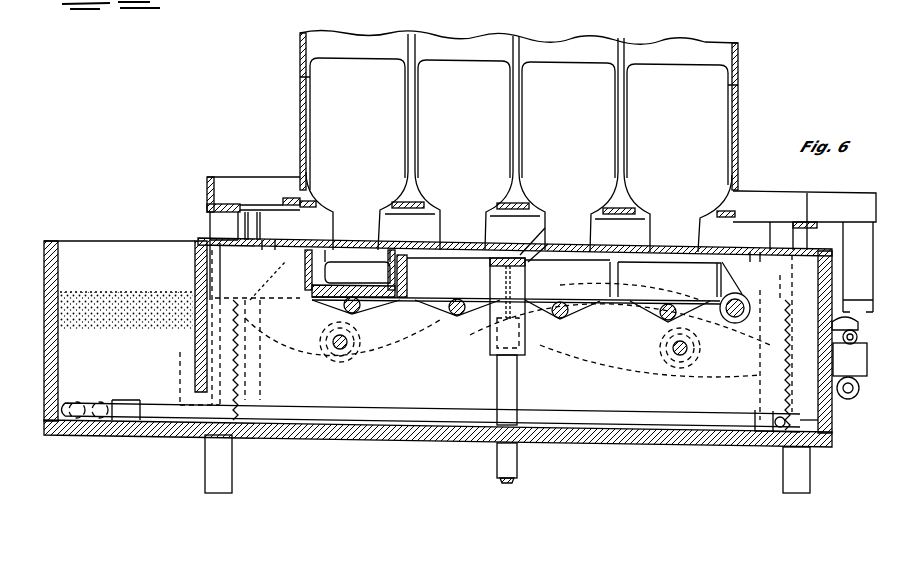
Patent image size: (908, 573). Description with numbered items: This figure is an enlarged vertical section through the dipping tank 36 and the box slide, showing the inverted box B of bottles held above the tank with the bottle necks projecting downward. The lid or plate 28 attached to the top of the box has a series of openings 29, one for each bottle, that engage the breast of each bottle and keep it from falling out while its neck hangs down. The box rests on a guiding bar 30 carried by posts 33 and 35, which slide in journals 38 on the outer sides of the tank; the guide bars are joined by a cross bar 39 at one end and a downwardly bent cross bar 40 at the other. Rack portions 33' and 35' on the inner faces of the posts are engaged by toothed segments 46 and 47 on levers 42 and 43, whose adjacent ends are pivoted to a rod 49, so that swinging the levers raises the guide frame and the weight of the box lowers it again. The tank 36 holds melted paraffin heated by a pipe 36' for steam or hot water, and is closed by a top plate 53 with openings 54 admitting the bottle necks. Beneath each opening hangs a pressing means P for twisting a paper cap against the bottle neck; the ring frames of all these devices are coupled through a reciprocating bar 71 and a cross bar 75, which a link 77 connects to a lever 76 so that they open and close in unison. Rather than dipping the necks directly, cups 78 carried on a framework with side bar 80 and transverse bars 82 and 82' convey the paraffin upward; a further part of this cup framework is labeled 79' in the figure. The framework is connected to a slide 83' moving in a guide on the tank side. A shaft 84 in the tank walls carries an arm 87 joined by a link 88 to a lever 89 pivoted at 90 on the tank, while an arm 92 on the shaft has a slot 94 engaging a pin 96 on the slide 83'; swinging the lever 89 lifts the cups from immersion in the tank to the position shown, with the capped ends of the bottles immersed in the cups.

The box B is at (529, 111).
The pressing means P is at (398, 250).
The lid or plate 28 is at (748, 214).
The openings 29 is at (634, 212).
The guiding bar 30 is at (805, 226).
The post 33 is at (207, 226).
The rack portion 33' is at (240, 323).
The post 35 is at (806, 211).
The rack portion 35' is at (827, 423).
The dipping tank 36 is at (438, 361).
The pipe 36' is at (431, 408).
The journals 38 is at (248, 434).
The cross bar 39 is at (207, 189).
The cross bar 40 is at (865, 262).
The lever 42 is at (376, 342).
The lever 43 is at (632, 350).
The toothed segment 46 is at (248, 366).
The toothed segment 47 is at (773, 376).
The rod 49 is at (517, 470).
The top plate 53 is at (308, 246).
The openings 54 is at (486, 250).
The parallel bar 71 is at (750, 248).
The cross bar 75 is at (271, 233).
The lever 76 is at (252, 212).
The link 77 is at (264, 281).
The cups 78 is at (305, 280).
The gear 79' is at (375, 342).
The side bar 80 is at (625, 316).
The transverse bar 82 is at (332, 313).
The transverse bar 82' is at (453, 295).
The slide 83' is at (491, 308).
The shaft 84 is at (742, 300).
The arm 87 is at (860, 328).
The link 88 is at (858, 340).
The lever 89 is at (860, 386).
The pivot 90 is at (867, 362).
The arm 92 is at (707, 348).
The slot 94 is at (548, 244).
The pin 96 is at (543, 231).